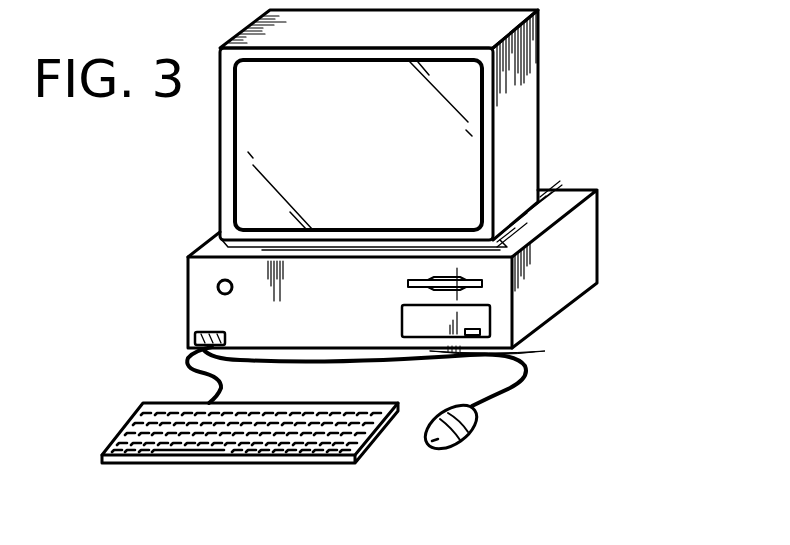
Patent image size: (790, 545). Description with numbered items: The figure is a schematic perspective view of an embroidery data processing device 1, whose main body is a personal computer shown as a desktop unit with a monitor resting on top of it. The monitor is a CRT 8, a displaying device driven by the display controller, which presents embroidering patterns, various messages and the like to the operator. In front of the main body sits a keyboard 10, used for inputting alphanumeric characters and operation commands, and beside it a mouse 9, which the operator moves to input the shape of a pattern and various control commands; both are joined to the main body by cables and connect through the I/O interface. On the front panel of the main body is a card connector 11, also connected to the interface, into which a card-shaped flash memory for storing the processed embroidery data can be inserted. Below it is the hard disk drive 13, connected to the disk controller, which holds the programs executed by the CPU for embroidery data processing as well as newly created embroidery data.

The computer system 1 is at (609, 119).
The CRT 8 is at (237, 175).
The mouse 9 is at (460, 423).
The keyboard 10 is at (226, 446).
The card connector 11 is at (408, 284).
The hard disk drive 13 is at (410, 322).